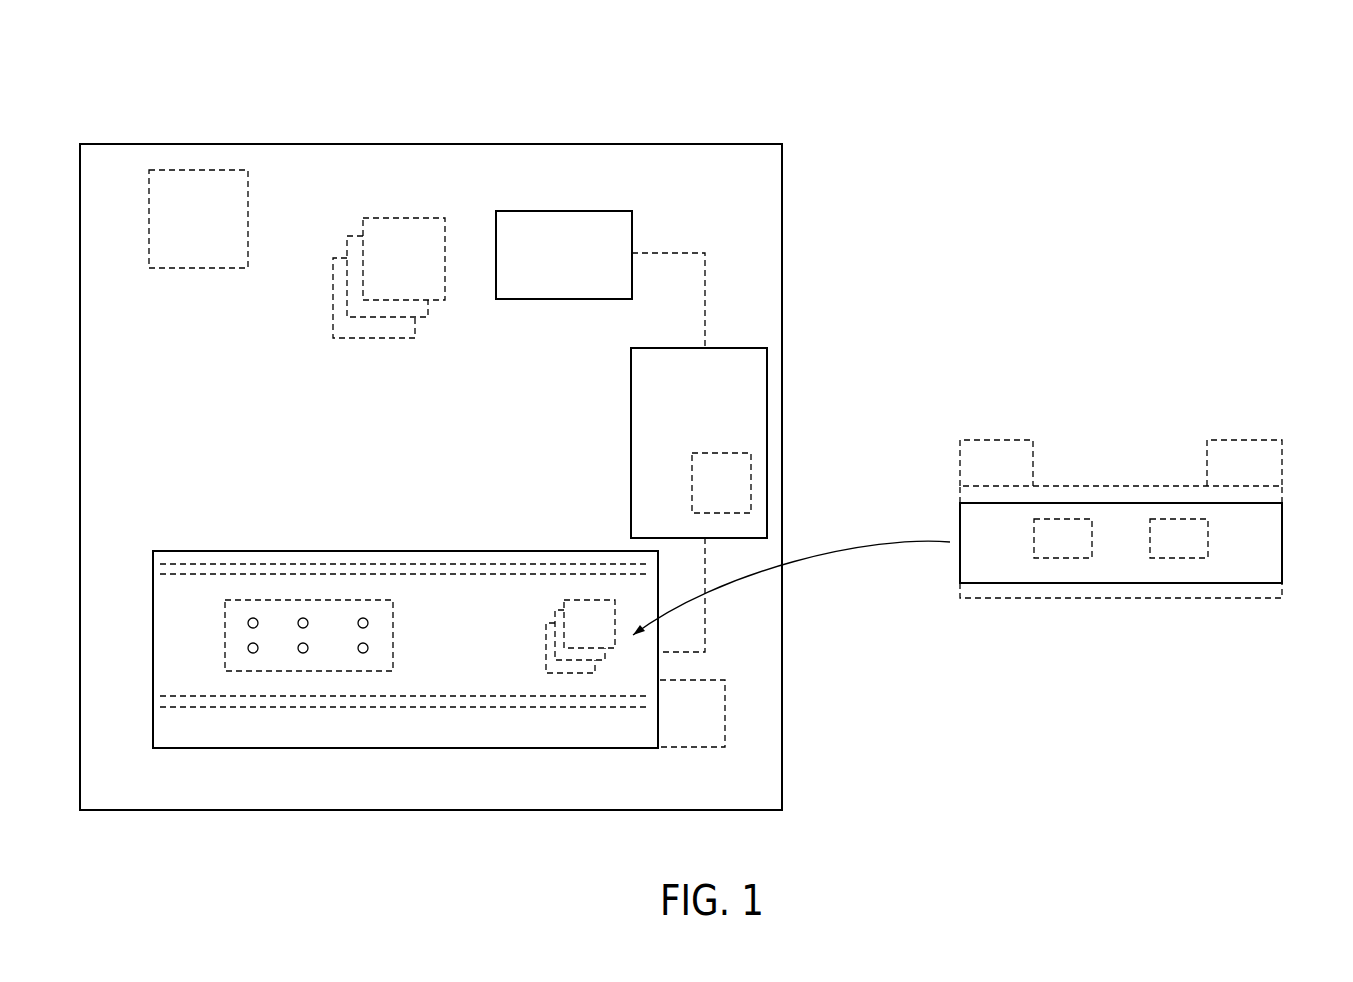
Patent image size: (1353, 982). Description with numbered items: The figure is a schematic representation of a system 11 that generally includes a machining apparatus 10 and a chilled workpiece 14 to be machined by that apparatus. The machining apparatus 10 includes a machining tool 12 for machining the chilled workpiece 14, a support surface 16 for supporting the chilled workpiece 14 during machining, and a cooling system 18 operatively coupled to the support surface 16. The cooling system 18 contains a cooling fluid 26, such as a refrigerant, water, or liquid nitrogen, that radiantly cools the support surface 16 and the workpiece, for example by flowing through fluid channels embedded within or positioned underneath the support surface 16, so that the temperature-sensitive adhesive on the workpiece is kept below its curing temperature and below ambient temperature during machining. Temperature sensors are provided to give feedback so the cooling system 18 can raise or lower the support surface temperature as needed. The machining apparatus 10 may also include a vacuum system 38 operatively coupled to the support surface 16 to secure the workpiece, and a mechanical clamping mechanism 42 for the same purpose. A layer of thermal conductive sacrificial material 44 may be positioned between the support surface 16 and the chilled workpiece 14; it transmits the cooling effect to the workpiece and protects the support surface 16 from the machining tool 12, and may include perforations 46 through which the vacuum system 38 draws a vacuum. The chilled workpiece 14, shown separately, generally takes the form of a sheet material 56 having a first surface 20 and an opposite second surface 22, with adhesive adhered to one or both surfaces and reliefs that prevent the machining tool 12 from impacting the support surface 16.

The machining apparatus 10 is at (860, 182).
The system 11 is at (1135, 80).
The machining tool 12 is at (600, 279).
The chilled workpiece 14 is at (1113, 506).
The support surface 16 is at (175, 748).
The cooling system 18 is at (699, 500).
The first surface 20 is at (998, 503).
The second surface 22 is at (985, 583).
The cooling fluid 26 is at (731, 372).
The vacuum system 38 is at (198, 219).
The mechanical clamping mechanism 42 is at (725, 710).
The thermal conductive sacrificial material 44 is at (225, 637).
The perforations 46 is at (259, 648).
The sheet material 56 is at (1272, 541).